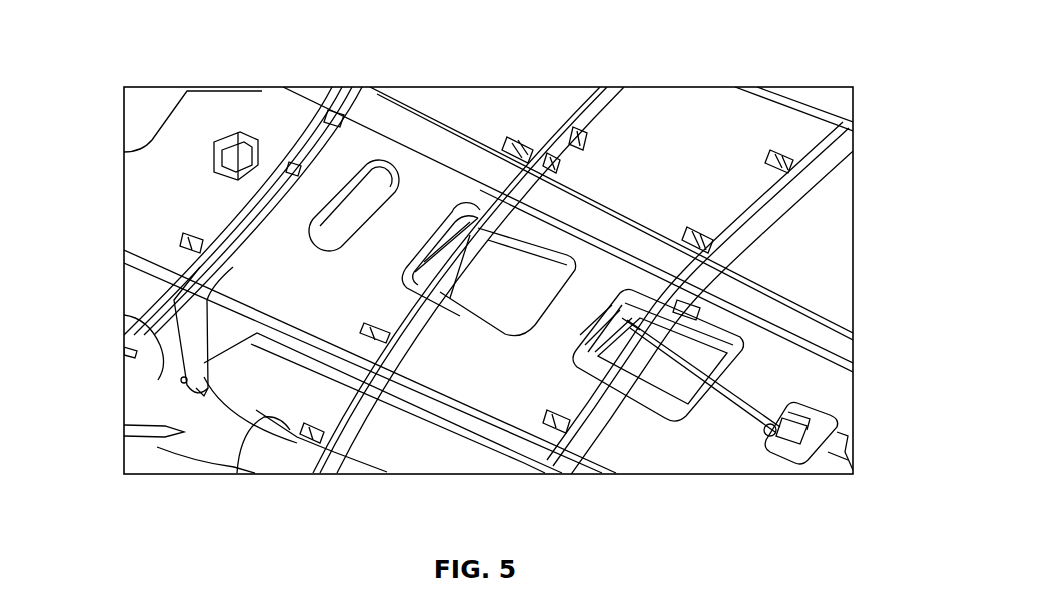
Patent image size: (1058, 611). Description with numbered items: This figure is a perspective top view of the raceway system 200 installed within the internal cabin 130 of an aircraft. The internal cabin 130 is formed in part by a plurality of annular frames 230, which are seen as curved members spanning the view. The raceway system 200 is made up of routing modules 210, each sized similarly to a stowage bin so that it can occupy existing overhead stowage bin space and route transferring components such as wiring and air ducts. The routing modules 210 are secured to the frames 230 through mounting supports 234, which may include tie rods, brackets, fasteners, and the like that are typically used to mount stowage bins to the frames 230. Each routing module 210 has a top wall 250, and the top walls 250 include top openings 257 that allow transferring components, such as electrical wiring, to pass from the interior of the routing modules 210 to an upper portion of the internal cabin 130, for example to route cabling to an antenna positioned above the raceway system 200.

The internal cabin 130 is at (766, 344).
The raceway system 200 is at (442, 178).
The routing module 210 is at (418, 148).
The annular frame 230 is at (588, 110).
The mounting support 234 is at (292, 166).
The top wall 250 is at (507, 377).
The top opening 257 is at (343, 220).